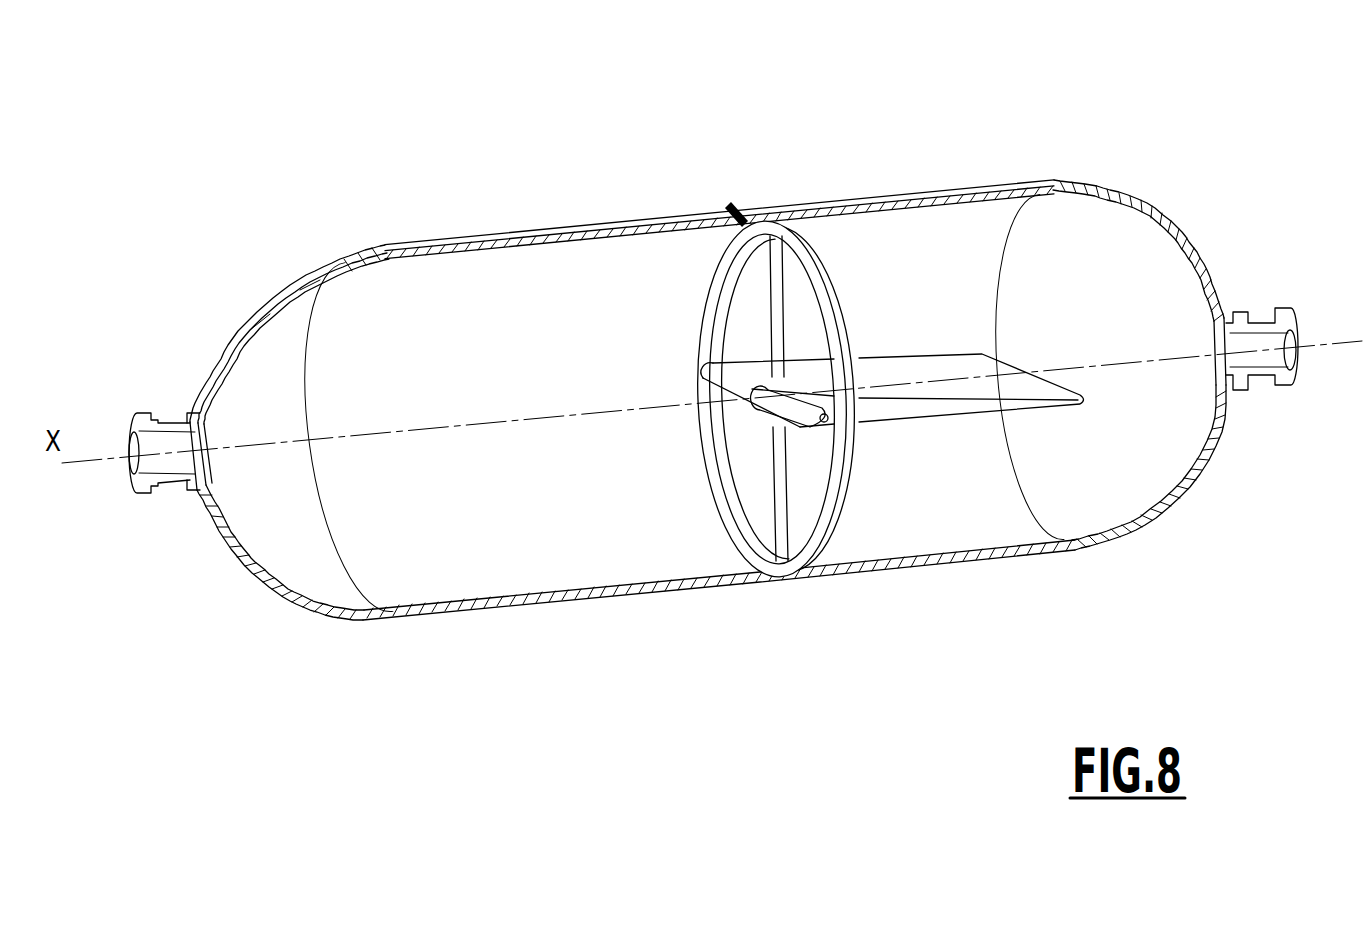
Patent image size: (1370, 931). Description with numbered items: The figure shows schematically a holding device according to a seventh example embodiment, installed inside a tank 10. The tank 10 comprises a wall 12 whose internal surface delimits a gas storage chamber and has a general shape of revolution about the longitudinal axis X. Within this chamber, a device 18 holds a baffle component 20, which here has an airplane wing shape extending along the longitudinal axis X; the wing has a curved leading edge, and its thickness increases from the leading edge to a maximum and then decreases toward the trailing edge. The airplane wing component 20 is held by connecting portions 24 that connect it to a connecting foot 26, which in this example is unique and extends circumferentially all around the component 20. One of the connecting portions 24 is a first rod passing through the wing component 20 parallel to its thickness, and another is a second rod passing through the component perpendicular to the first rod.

The tank 10 is at (330, 198).
The wall 12 is at (641, 223).
The device for holding a component 18 is at (737, 217).
The airplane wing component 20 is at (887, 407).
The connecting portions 24 is at (763, 397).
The connecting foot 26 is at (810, 262).